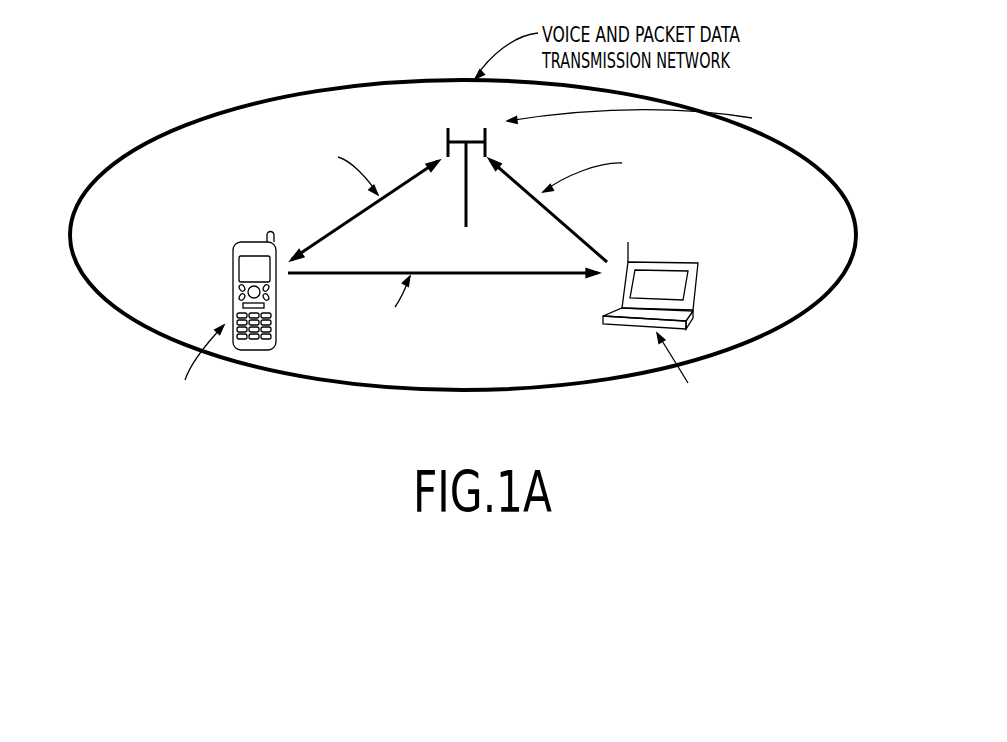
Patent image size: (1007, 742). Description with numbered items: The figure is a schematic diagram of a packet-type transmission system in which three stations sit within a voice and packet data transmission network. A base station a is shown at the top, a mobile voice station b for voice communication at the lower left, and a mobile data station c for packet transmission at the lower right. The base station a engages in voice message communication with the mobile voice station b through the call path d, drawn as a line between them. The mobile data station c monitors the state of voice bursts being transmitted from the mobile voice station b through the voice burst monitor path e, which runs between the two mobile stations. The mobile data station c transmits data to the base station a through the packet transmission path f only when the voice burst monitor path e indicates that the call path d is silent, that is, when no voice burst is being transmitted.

The base station a is at (487, 143).
The mobile voice station b is at (232, 273).
The mobile data station c is at (700, 270).
The call path d is at (346, 193).
The voice burst monitor path e is at (444, 317).
The packet transmission path f is at (635, 207).